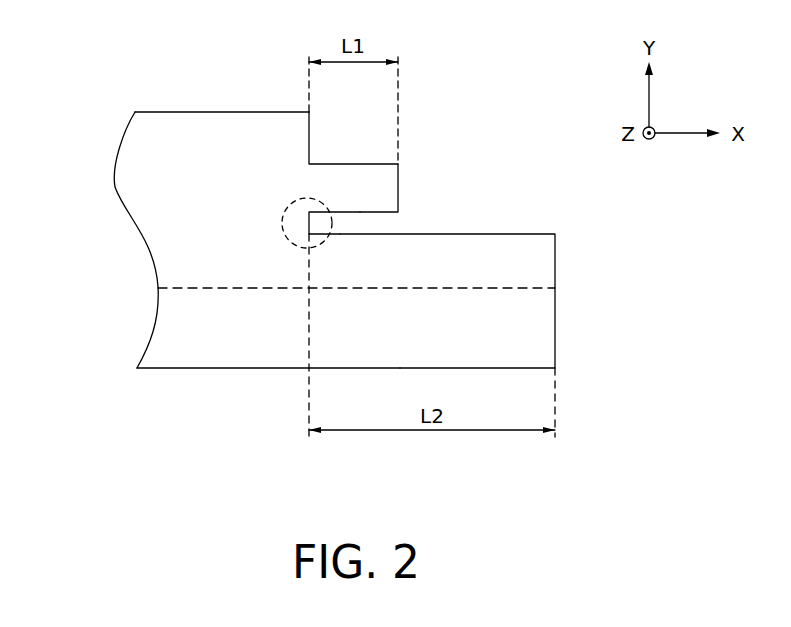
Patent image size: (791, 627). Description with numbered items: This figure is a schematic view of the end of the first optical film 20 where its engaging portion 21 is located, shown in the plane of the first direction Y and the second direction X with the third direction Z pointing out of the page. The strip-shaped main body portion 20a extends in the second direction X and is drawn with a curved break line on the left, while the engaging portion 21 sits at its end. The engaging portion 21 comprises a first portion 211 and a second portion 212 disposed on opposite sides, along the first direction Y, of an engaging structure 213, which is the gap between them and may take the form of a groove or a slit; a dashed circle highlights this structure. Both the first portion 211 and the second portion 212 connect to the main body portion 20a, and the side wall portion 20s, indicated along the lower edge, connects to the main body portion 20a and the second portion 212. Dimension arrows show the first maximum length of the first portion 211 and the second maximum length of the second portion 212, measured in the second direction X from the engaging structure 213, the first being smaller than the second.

The first optical film 20 is at (360, 231).
The main body portion 20a is at (140, 184).
The side wall portion 20s is at (212, 347).
The engaging portion 21 is at (401, 180).
The first portion 211 is at (382, 189).
The second portion 212 is at (440, 266).
The engaging structure 213 is at (333, 218).